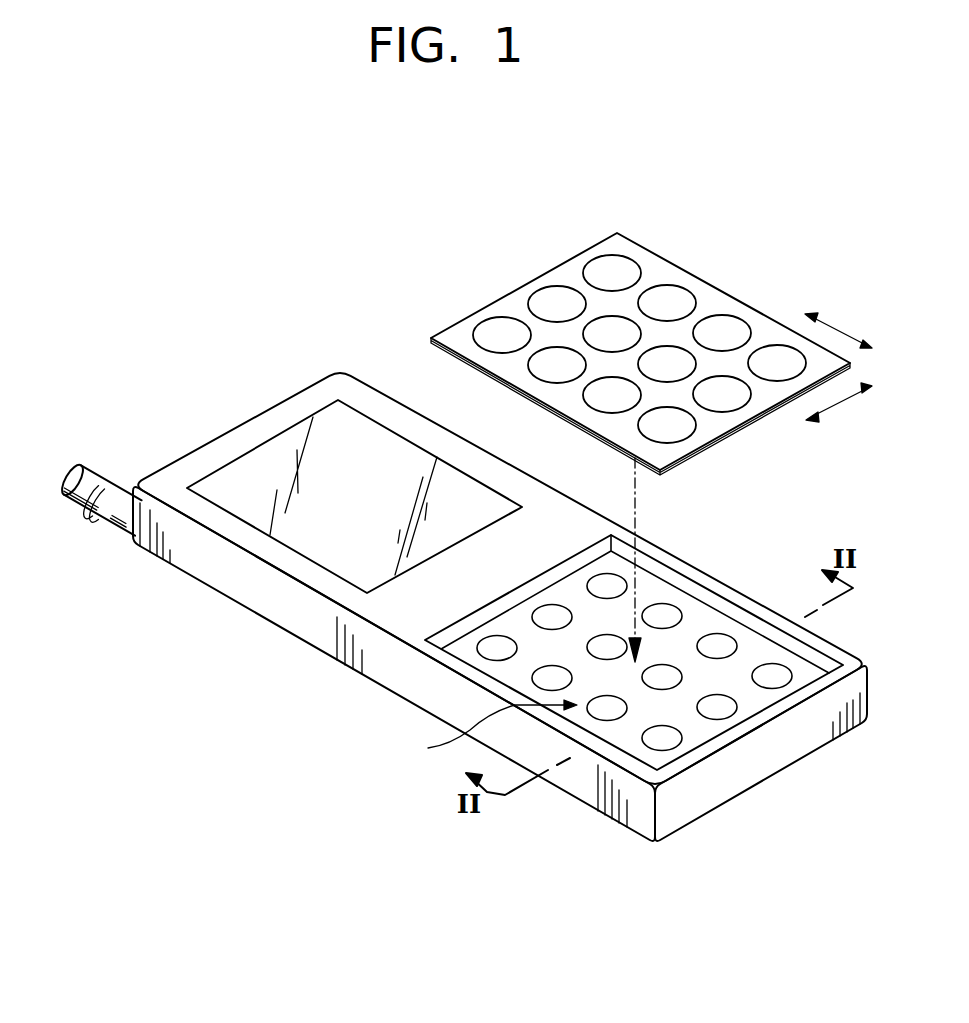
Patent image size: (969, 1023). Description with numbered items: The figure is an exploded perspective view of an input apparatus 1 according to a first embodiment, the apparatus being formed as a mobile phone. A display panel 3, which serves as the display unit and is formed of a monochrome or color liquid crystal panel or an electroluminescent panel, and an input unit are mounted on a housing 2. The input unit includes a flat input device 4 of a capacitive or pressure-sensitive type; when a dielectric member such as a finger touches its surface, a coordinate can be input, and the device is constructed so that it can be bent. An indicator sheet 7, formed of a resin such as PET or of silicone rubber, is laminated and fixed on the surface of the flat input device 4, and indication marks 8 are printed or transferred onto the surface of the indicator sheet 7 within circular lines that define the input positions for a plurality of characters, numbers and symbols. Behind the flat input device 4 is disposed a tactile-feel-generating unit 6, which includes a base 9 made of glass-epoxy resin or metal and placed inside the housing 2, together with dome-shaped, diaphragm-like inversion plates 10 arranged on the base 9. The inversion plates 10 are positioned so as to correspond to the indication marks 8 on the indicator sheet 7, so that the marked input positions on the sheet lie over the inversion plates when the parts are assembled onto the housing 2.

The input apparatus 1 is at (462, 524).
The housing 2 is at (273, 613).
The display panel 3 is at (275, 452).
The flat input device 4 is at (651, 415).
The tactile-feel-generating unit 6 is at (488, 734).
The indicator sheet 7 is at (750, 412).
The indication marks 8 is at (538, 289).
The base 9 is at (763, 697).
The inversion plates 10 is at (660, 608).